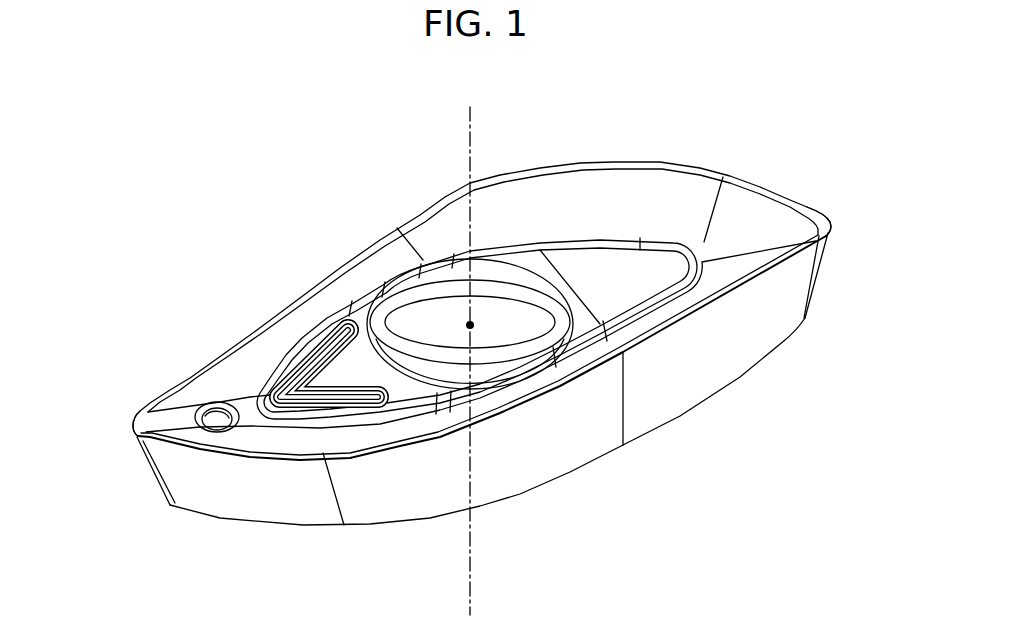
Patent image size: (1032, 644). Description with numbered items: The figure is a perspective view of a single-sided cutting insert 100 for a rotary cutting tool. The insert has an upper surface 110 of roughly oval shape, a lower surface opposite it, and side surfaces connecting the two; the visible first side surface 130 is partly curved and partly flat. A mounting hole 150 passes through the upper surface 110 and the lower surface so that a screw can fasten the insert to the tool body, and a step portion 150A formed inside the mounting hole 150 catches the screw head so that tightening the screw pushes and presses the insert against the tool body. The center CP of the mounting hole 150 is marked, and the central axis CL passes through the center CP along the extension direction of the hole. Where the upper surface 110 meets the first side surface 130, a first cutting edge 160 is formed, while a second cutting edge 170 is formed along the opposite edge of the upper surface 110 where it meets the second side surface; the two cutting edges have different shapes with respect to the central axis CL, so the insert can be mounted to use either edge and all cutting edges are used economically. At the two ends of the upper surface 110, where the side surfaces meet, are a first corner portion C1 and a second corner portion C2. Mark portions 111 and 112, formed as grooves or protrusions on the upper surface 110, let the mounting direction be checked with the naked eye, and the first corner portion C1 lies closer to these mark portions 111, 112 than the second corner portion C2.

The cutting insert 100 is at (242, 202).
The upper surface 110 is at (657, 202).
The mark portion 111 is at (213, 425).
The mark portion 112 is at (297, 403).
The first side surface 130 is at (520, 470).
The mounting hole 150 is at (410, 342).
The step portion 150A is at (507, 295).
The first cutting edge 160 is at (380, 428).
The second cutting edge 170 is at (614, 162).
The central axis CL is at (470, 348).
The center CP is at (488, 327).
The first corner portion C1 is at (126, 422).
The second corner portion C2 is at (835, 212).